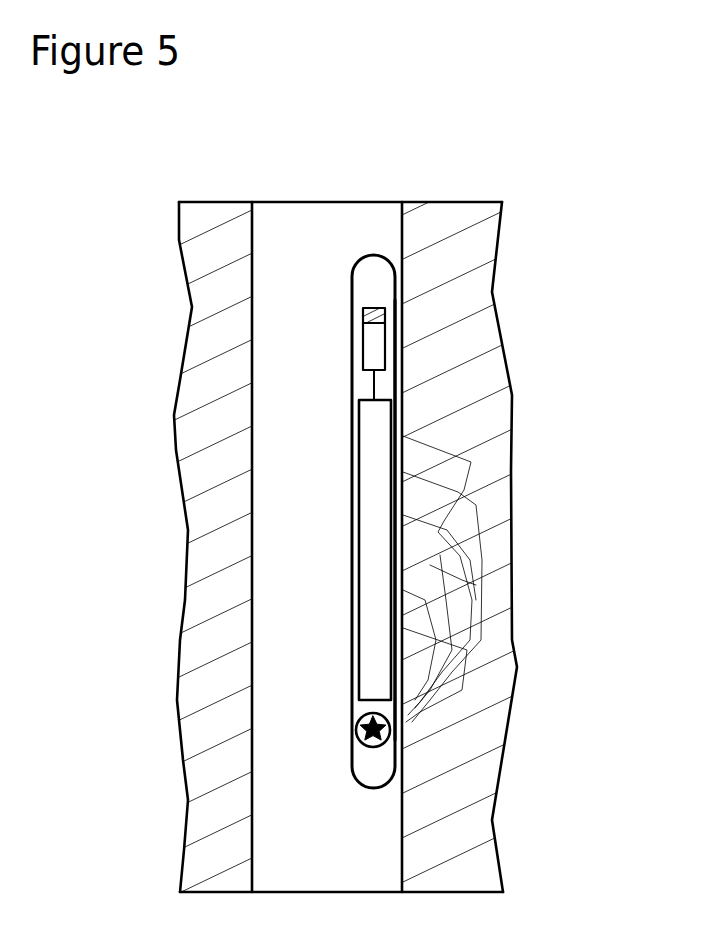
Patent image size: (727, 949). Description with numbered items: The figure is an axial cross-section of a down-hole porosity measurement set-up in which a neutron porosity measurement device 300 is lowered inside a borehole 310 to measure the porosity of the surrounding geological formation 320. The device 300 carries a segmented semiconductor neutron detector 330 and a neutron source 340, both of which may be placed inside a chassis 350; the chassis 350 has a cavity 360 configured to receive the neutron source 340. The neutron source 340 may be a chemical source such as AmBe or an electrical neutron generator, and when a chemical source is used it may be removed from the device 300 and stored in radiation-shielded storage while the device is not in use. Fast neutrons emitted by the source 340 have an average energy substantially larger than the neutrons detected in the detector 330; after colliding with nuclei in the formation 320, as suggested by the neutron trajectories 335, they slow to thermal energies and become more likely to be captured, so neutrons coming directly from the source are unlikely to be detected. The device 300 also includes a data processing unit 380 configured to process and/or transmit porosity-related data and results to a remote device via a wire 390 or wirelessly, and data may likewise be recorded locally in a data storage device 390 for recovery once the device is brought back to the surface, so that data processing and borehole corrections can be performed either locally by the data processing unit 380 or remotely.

The neutron porosity measurement device 300 is at (378, 281).
The borehole 310 is at (311, 322).
The geological formation 320 is at (233, 259).
The segmented semiconductor neutron detector 330 is at (382, 680).
The neutron trajectories 335 is at (450, 582).
The neutron source 340 is at (388, 745).
The chassis 350 is at (397, 375).
The cavity 360 is at (390, 733).
The data processing unit 380 is at (388, 346).
The wire 390 is at (378, 318).